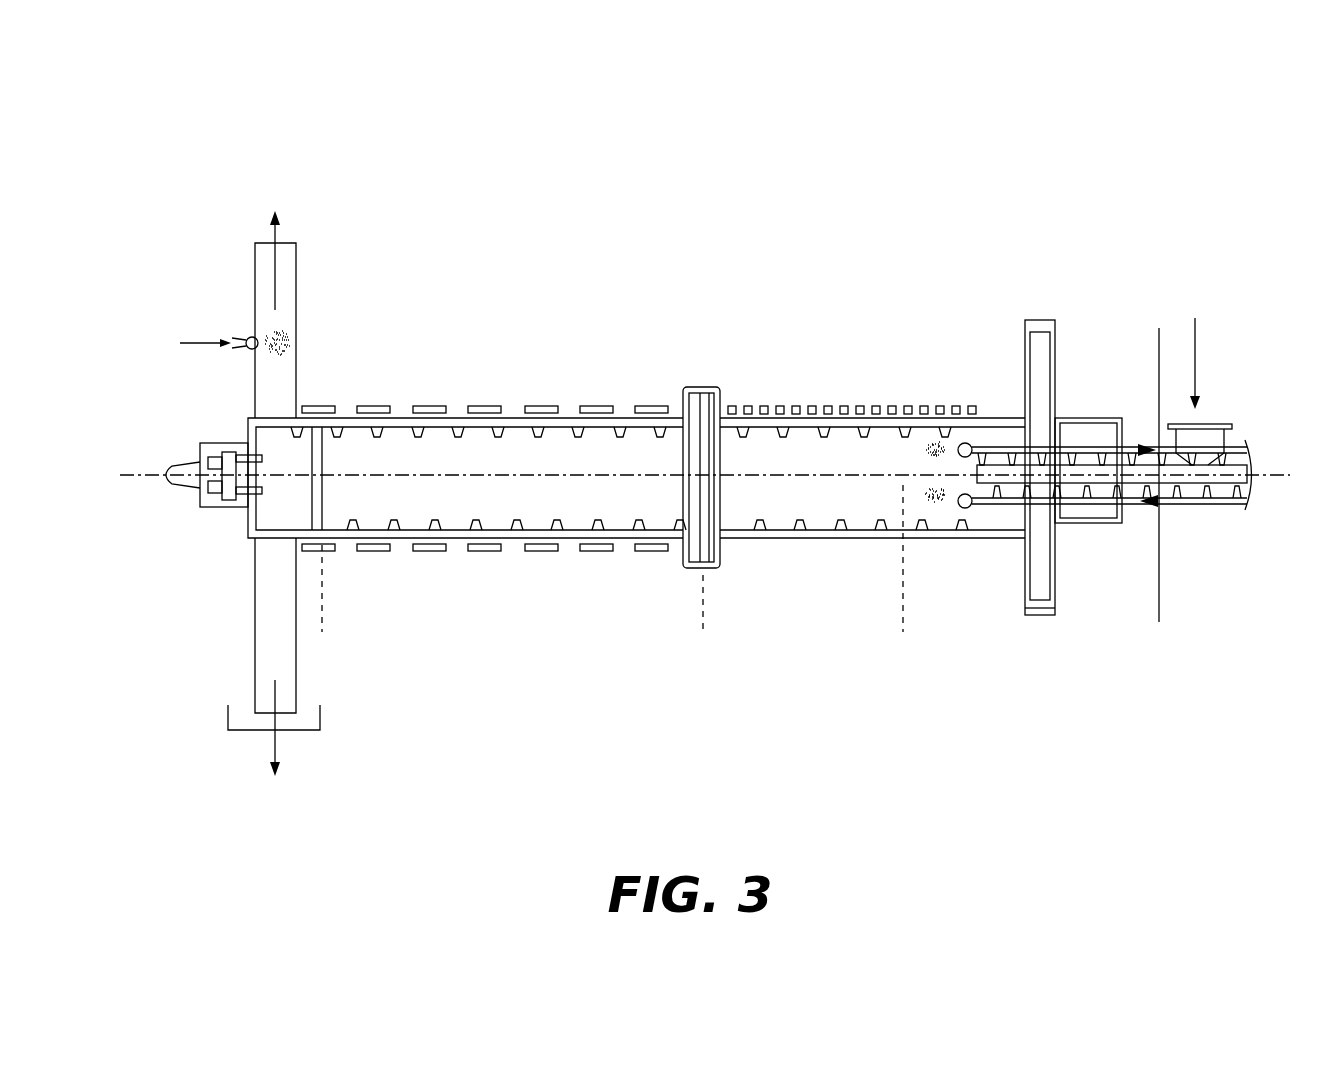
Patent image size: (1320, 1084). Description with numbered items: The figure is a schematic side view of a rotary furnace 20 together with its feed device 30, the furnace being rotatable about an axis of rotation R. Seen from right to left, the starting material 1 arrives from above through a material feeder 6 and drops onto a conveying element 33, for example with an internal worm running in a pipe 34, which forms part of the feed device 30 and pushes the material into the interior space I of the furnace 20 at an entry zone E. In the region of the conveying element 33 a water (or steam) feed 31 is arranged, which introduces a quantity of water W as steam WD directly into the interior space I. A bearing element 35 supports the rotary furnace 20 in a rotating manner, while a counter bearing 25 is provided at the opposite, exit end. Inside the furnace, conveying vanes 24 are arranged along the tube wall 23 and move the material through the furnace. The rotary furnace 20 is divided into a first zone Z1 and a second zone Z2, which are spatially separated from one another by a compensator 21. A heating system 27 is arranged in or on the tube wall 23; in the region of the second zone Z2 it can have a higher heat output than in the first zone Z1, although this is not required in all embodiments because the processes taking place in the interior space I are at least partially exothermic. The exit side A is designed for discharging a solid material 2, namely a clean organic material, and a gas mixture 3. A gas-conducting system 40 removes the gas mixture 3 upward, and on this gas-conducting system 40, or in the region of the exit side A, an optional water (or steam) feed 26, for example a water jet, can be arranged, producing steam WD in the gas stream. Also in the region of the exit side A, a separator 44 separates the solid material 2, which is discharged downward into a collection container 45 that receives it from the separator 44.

The starting material/material being used 1 is at (1194, 348).
The solid material/clean organic material 2 is at (274, 745).
The gas mixture 3 is at (274, 248).
The material feeder 6 is at (1222, 424).
The rotary furnace 20 is at (638, 328).
The compensator 21 is at (684, 400).
The tube wall 23 is at (866, 405).
The conveying vanes 24 is at (786, 432).
The counter bearing 25 is at (212, 507).
The water (or steam) feed 26 is at (252, 352).
The heating system 27 is at (486, 405).
The feed device 30 is at (1105, 401).
The water (or steam) feed 31 is at (1090, 440).
The conveying element/worm 33 is at (1250, 476).
The pipe 34 is at (1216, 486).
The bearing element/bearing 35 is at (1040, 322).
The gas-conducting system 40 is at (256, 283).
The separator 44 is at (258, 660).
The collection container 45 is at (228, 715).
The exit side A is at (307, 386).
The entry zone E is at (913, 560).
The interior space I is at (818, 512).
The axis of rotation R is at (714, 475).
The water content (water or steam) W is at (663, 476).
The steam WD is at (286, 332).
The first zone Z1 is at (703, 632).
The second zone Z2 is at (322, 632).